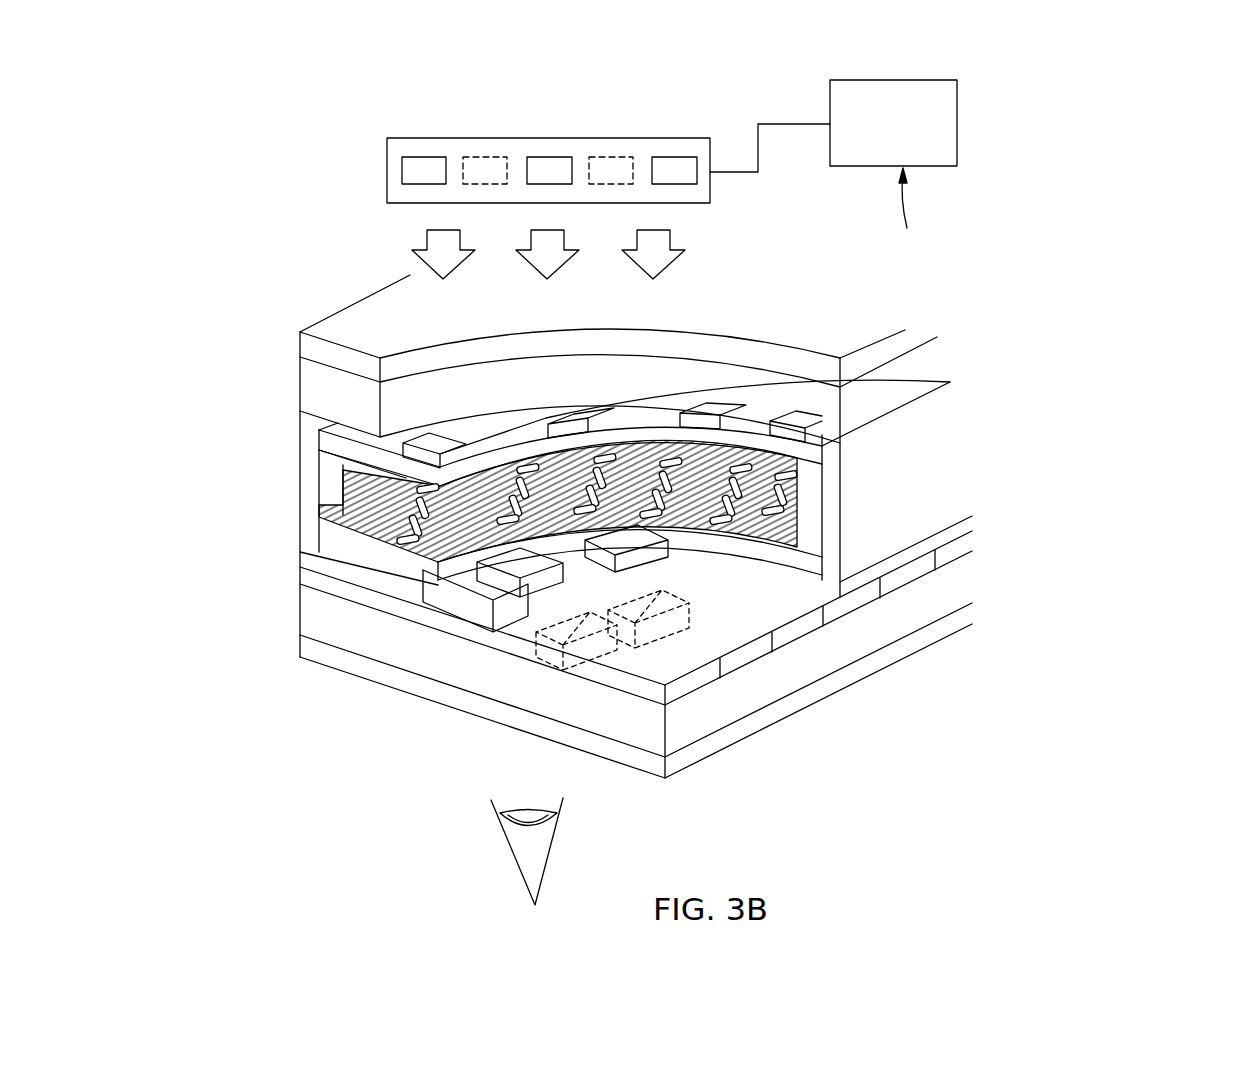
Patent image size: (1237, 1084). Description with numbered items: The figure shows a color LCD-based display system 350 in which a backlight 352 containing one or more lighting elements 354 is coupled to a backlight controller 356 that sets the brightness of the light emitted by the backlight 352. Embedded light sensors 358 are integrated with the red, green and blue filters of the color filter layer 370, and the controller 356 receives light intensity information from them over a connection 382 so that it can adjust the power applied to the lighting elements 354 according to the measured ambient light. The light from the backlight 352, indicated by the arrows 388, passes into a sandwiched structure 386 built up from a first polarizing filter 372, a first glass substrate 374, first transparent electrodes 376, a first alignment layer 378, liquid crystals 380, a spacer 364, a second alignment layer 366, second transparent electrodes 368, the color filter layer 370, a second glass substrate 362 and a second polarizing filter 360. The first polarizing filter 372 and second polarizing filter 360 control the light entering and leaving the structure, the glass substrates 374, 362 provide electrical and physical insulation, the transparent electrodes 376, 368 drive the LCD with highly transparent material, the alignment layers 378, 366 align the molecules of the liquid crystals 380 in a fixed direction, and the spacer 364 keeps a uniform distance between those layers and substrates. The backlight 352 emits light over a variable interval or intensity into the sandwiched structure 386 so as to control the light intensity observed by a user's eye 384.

The color LCD-based display system 350 is at (1108, 173).
The backlight 352 is at (388, 158).
The lighting elements 354 is at (423, 157).
The backlight controller 356 is at (957, 98).
The light sensors 358 is at (472, 157).
The second polarizing filter 360 is at (305, 657).
The second glass substrate 362 is at (658, 737).
The spacer 364 is at (365, 503).
The second alignment layer 366 is at (423, 570).
The second transparent electrodes 368 is at (507, 605).
The color filter layer 370 is at (753, 638).
The first polarizing filter 372 is at (905, 330).
The first glass substrate 374 is at (840, 417).
The first transparent electrodes 376 is at (840, 442).
The first alignment layer 378 is at (822, 470).
The liquid crystals 380 is at (797, 527).
The connection 382 is at (929, 206).
The user's eye 384 is at (515, 845).
The sandwiched structure 386 is at (283, 380).
The light 388 is at (420, 250).